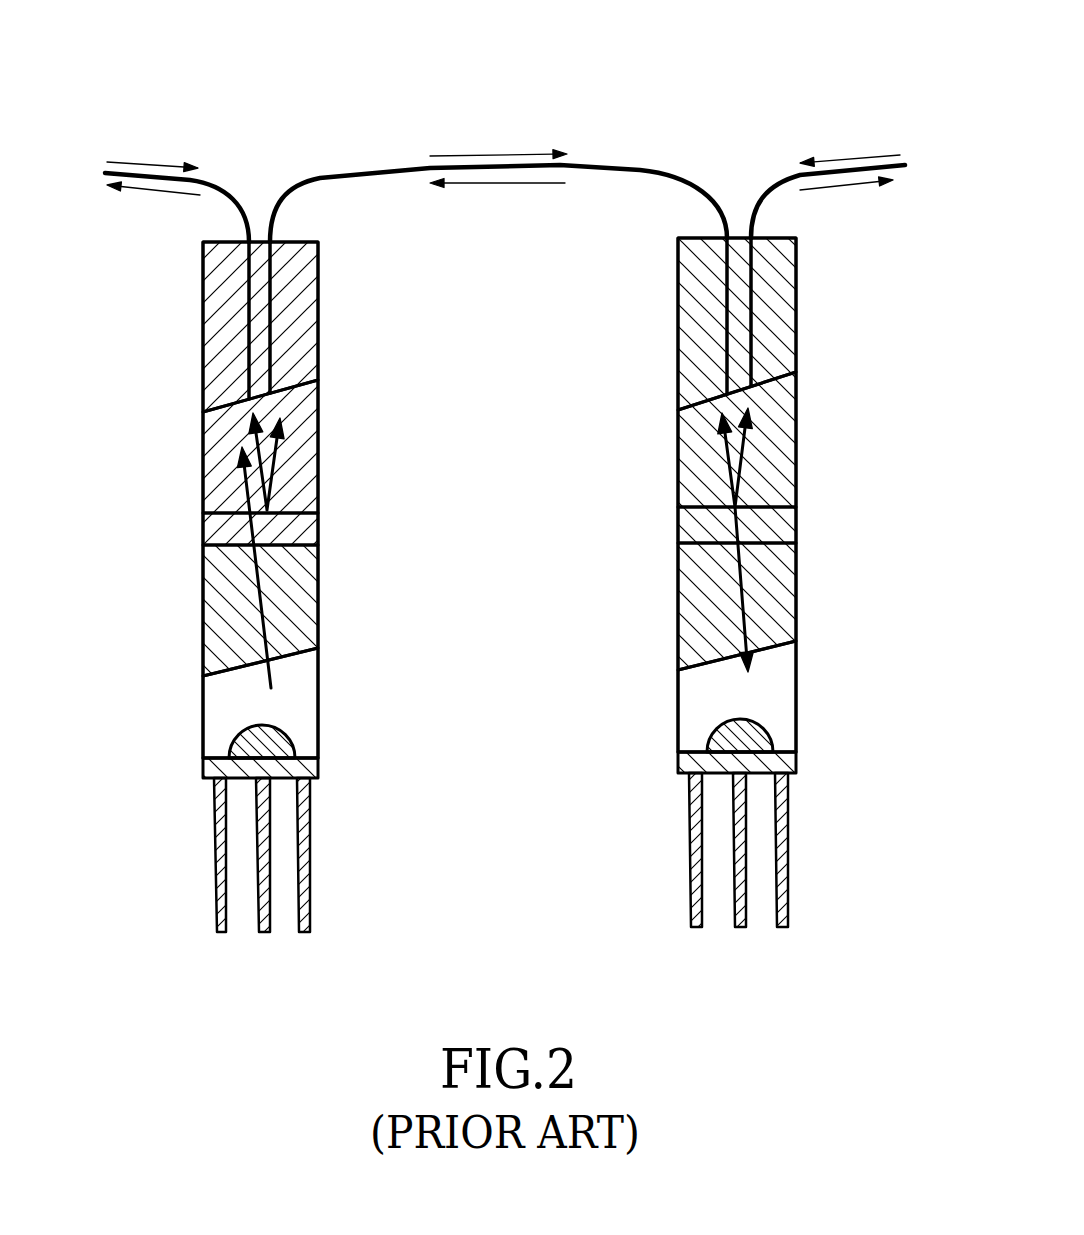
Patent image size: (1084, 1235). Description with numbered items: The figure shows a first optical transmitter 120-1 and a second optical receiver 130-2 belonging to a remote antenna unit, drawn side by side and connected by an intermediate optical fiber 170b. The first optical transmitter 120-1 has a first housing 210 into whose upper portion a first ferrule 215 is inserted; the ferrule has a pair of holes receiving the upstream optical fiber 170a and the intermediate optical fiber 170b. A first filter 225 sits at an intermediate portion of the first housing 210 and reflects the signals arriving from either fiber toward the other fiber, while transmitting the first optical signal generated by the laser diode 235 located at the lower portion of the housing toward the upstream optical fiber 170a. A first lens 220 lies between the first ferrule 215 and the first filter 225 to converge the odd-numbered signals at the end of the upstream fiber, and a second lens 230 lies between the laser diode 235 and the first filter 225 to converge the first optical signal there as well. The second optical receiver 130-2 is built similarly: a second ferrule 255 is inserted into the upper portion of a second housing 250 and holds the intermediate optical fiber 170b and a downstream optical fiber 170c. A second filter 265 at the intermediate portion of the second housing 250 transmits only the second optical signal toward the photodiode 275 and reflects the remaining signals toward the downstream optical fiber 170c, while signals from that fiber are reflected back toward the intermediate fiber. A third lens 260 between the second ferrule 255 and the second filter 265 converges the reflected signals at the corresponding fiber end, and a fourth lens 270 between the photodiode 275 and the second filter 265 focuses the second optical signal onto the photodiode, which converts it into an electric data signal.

The first optical transmitter 120-1 is at (180, 598).
The second optical receiver 130-2 is at (826, 570).
The upstream optical fiber 170a is at (240, 205).
The intermediate optical fiber 170b is at (614, 170).
The downstream optical fiber 170c is at (762, 200).
The first housing 210 is at (318, 682).
The first ferrule 215 is at (318, 330).
The first lens 220 is at (318, 446).
The first filter 225 is at (318, 532).
The second lens 230 is at (318, 590).
The laser diode 235 is at (285, 749).
The second housing 250 is at (796, 672).
The second ferrule 255 is at (796, 328).
The third lens 260 is at (796, 443).
The second filter 265 is at (796, 525).
The fourth lens 270 is at (796, 612).
The photodiode 275 is at (762, 744).